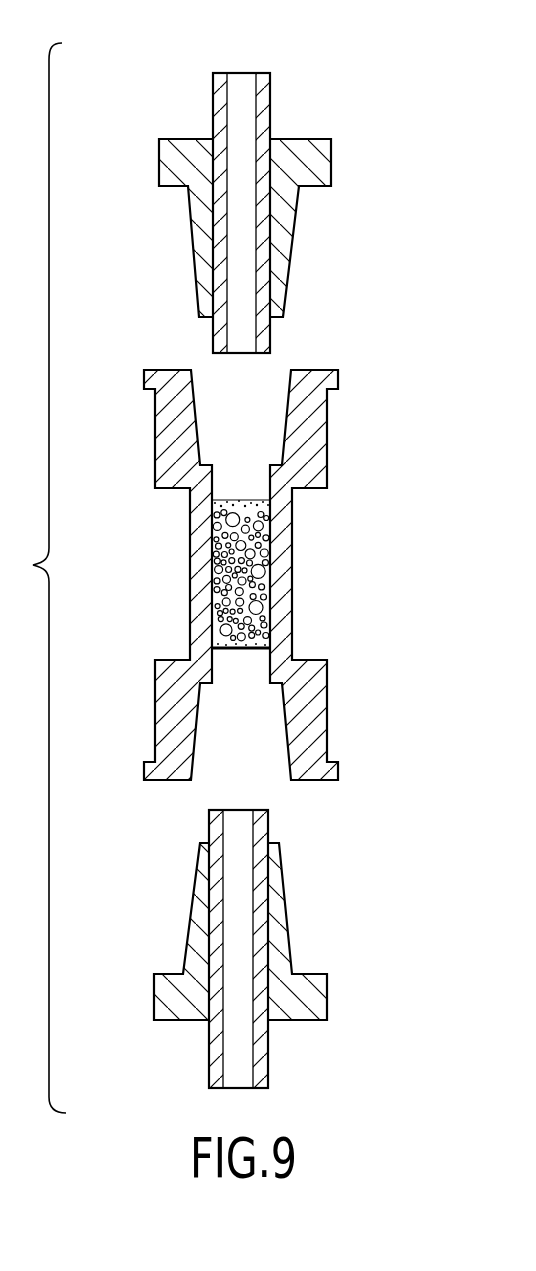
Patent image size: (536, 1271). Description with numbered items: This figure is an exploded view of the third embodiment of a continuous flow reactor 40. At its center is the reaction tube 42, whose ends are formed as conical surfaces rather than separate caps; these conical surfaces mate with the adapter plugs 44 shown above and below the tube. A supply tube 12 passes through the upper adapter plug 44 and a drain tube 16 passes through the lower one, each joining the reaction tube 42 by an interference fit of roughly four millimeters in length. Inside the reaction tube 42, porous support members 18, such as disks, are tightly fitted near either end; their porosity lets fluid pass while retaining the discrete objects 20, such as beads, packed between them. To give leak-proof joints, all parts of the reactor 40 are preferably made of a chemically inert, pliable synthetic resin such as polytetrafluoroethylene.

The supply tube 12 is at (263, 85).
The drain tube 16 is at (262, 1075).
The porous support member 18 is at (258, 499).
The discrete objects 20 is at (220, 572).
The continuous flow reactor 40 is at (395, 559).
The reaction tube 42 is at (283, 623).
The adapter plug 44 is at (332, 158).